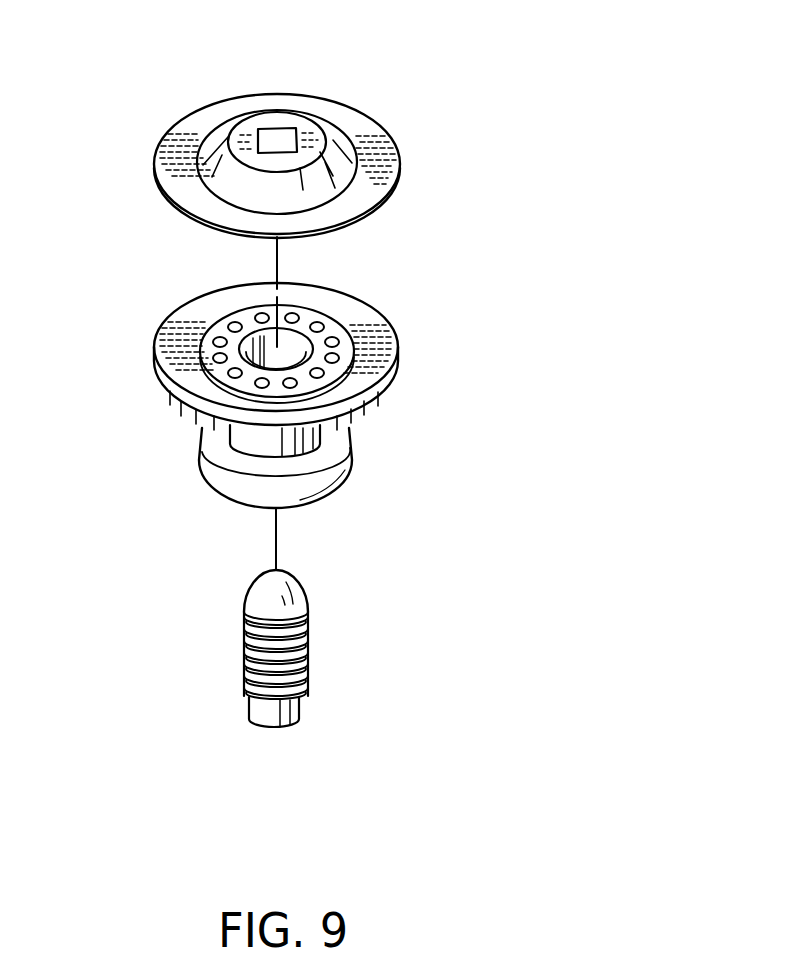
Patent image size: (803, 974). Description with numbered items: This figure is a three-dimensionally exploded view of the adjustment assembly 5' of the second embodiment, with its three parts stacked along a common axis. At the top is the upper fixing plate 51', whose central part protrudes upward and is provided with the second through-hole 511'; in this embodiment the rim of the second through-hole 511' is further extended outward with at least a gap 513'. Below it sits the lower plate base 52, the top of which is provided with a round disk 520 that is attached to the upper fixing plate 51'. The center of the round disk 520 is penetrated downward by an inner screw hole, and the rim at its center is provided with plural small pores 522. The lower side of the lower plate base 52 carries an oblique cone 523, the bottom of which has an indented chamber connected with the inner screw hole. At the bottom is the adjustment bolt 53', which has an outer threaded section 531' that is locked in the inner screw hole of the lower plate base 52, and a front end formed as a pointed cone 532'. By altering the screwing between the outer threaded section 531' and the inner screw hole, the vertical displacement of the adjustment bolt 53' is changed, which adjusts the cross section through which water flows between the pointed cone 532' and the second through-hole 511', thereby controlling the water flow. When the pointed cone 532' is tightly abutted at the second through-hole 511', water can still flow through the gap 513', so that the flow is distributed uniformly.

The adjustment assembly 5' is at (646, 195).
The upper fixing plate 51' is at (362, 125).
The second through-hole 511' is at (250, 101).
The gap 513' is at (313, 82).
The lower plate base 52 is at (293, 378).
The round disk 520 is at (368, 332).
The small pores 522 is at (218, 340).
The oblique cone 523 is at (210, 470).
The adjustment bolt 53' is at (266, 622).
The outer threaded section 531' is at (184, 669).
The pointed cone 532' is at (187, 564).